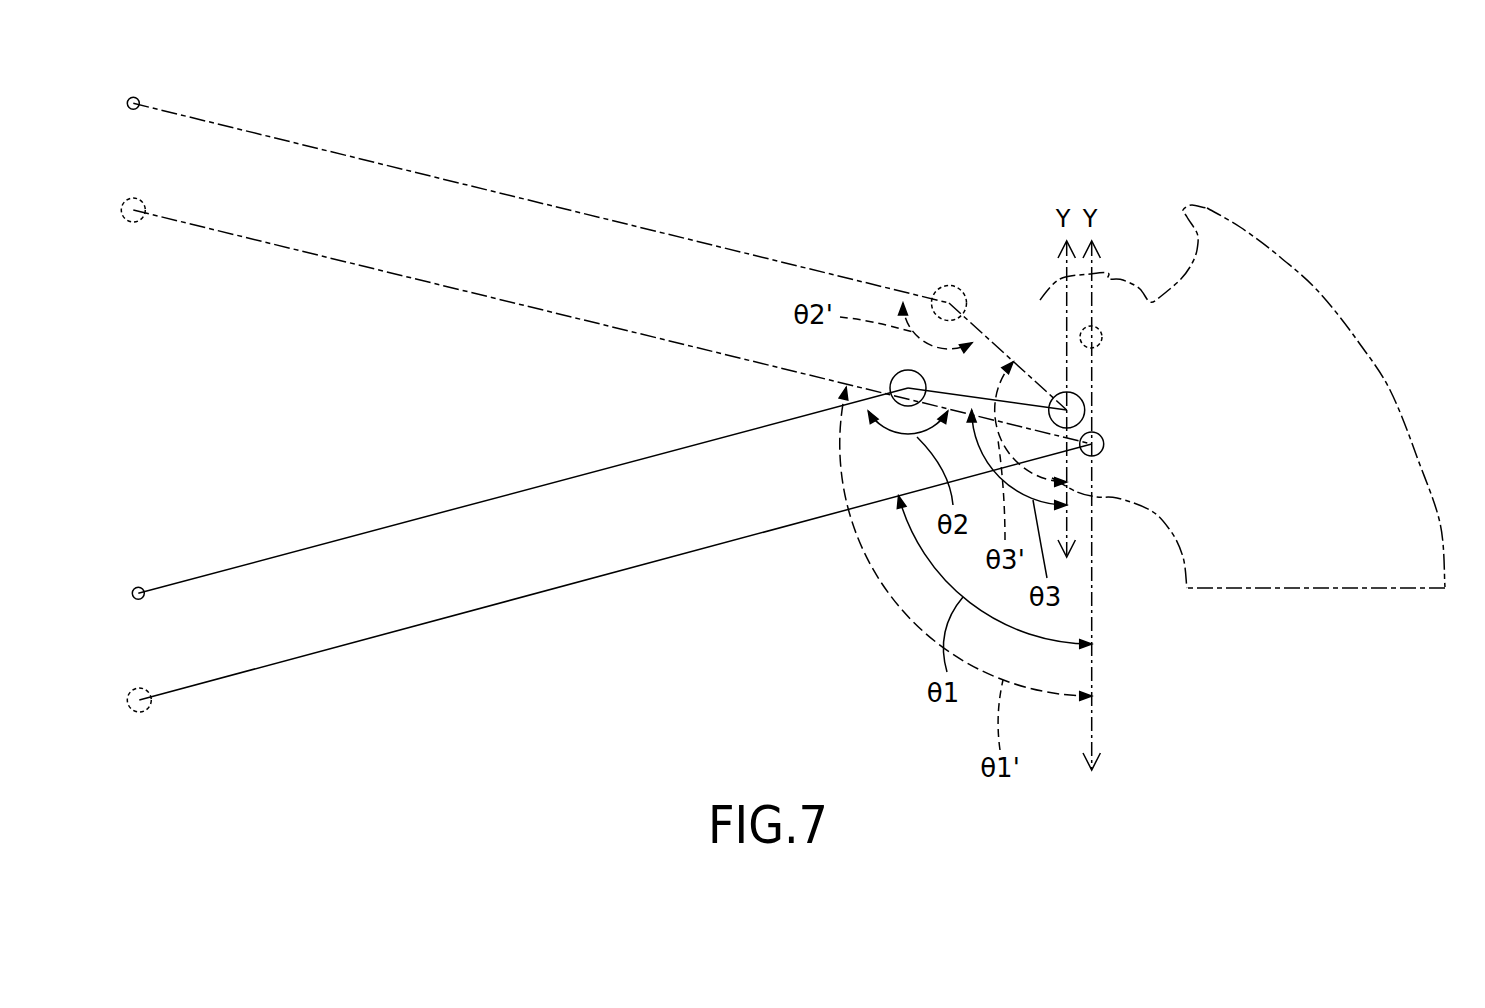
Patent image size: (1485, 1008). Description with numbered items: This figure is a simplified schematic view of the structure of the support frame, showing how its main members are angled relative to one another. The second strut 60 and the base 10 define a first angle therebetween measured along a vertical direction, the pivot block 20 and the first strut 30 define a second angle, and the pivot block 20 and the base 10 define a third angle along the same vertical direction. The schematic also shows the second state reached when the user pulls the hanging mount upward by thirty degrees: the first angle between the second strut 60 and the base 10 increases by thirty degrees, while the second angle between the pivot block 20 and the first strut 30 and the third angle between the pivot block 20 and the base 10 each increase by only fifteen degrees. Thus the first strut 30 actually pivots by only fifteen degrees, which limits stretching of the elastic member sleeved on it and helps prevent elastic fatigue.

The base 10 is at (1312, 295).
The pivot block 20 is at (982, 330).
The first strut 30 is at (405, 170).
The second strut 60 is at (418, 280).